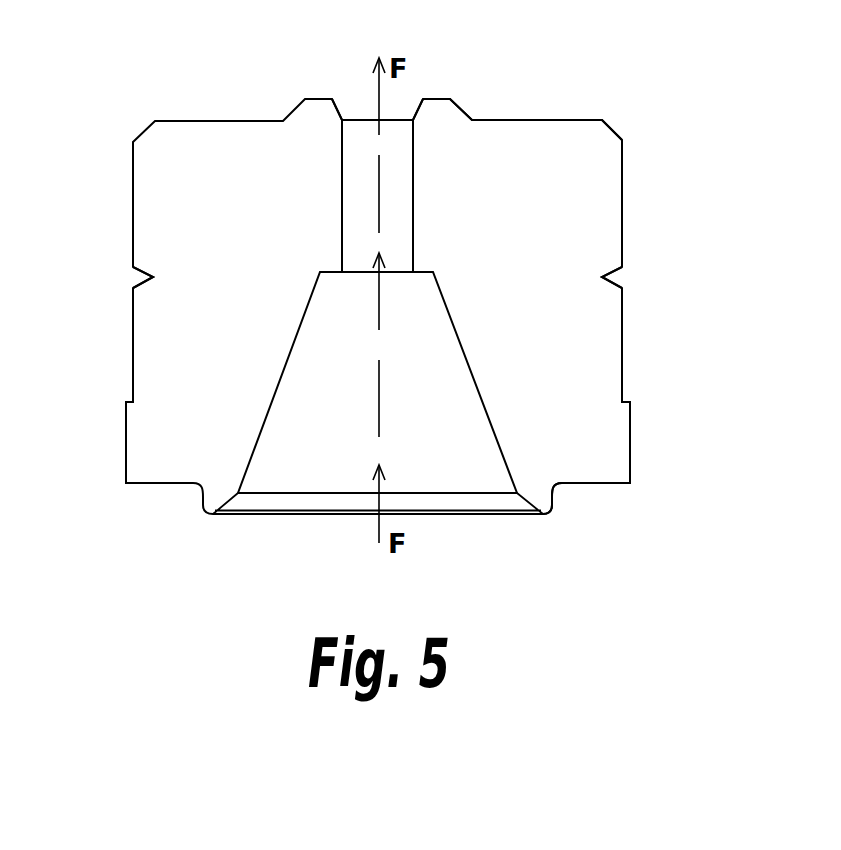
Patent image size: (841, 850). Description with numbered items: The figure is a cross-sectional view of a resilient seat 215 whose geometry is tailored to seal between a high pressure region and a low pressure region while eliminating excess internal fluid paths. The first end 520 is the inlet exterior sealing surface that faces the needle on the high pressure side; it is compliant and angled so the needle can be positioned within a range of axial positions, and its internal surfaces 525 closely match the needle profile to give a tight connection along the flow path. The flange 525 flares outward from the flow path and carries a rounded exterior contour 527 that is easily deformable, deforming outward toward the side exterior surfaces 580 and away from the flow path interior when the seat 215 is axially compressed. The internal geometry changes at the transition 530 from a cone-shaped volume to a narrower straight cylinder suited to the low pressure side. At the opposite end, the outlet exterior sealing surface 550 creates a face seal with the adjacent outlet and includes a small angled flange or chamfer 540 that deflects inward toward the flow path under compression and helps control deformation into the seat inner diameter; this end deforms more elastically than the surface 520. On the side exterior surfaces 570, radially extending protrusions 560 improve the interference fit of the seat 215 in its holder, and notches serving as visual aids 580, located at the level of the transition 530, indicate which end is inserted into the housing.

The seat 215 is at (257, 235).
The first end 520 is at (433, 516).
The flange 525 is at (482, 388).
The rounded exterior contour 527 is at (550, 514).
The transition 530 is at (415, 270).
The flange 540 is at (462, 106).
The outlet exterior sealing surface 550 is at (318, 92).
The protrusions 560 is at (126, 438).
The side exterior surfaces 570 is at (622, 352).
The visual aids 580 is at (140, 277).